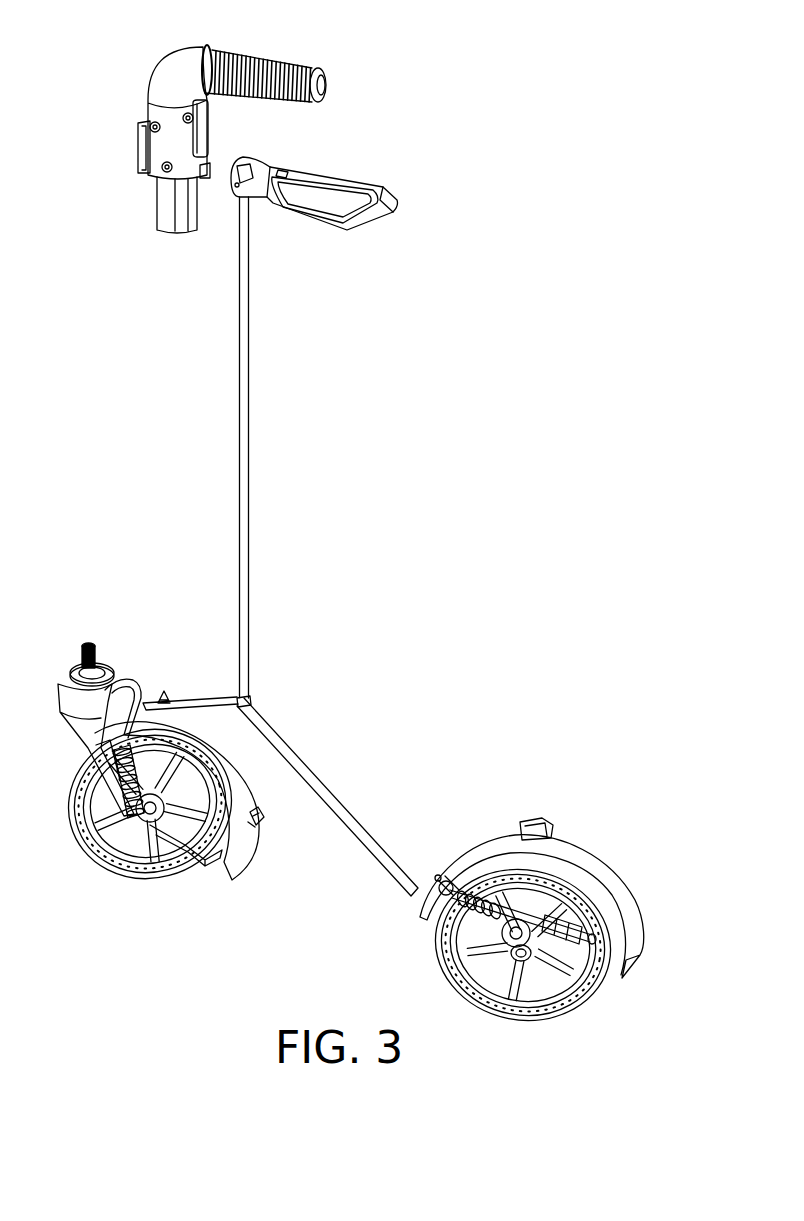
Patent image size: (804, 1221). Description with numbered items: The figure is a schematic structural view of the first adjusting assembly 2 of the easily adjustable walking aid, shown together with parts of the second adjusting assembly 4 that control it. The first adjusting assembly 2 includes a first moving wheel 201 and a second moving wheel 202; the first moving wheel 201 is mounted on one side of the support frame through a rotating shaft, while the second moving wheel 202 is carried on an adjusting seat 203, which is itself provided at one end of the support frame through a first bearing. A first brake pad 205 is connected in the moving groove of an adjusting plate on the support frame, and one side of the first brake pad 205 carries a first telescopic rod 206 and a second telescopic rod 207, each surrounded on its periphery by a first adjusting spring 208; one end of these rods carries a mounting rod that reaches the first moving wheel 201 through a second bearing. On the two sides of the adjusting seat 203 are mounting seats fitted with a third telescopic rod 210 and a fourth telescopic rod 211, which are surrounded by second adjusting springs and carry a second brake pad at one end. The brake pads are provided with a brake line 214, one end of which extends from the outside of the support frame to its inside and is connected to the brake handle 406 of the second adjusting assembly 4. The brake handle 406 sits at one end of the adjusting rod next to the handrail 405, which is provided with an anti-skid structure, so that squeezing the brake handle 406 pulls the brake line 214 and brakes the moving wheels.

The first adjusting assembly 2 is at (450, 588).
The second adjusting assembly 4 is at (400, 88).
The handrail 405 is at (178, 100).
The brake handle 406 is at (272, 170).
The first moving wheel 201 is at (517, 902).
The second moving wheel 202 is at (208, 790).
The adjusting seat 203 is at (98, 660).
The first brake pad 205 is at (478, 846).
The first telescopic rod 206 is at (582, 927).
The second telescopic rod 207 is at (446, 880).
The first adjusting spring 208 is at (580, 943).
The third telescopic rod 210 is at (254, 819).
The fourth telescopic rod 211 is at (160, 705).
The brake line 214 is at (246, 518).